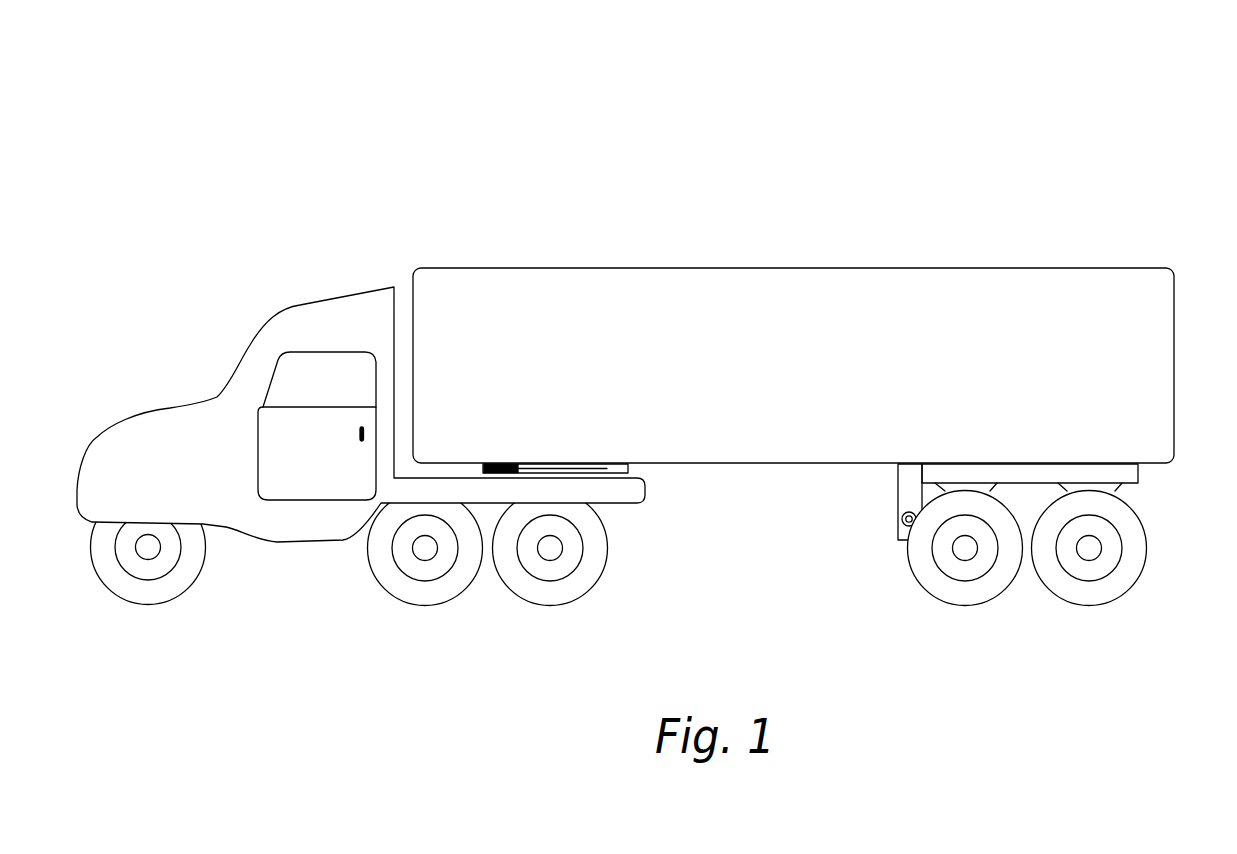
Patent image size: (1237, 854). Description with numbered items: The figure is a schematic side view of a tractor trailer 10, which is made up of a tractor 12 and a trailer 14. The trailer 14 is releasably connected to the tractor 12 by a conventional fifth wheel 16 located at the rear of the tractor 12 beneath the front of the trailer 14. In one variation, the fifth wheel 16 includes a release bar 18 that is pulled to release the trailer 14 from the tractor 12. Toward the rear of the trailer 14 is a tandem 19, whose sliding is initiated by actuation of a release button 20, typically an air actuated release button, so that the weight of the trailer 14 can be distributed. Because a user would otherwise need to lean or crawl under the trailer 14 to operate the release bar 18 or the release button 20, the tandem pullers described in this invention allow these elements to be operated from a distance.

The tractor trailer 10 is at (872, 115).
The tractor 12 is at (300, 305).
The trailer 14 is at (655, 267).
The fifth wheel 16 is at (628, 469).
The release bar 18 is at (500, 463).
The tandem 19 is at (1103, 473).
The release button 20 is at (900, 518).